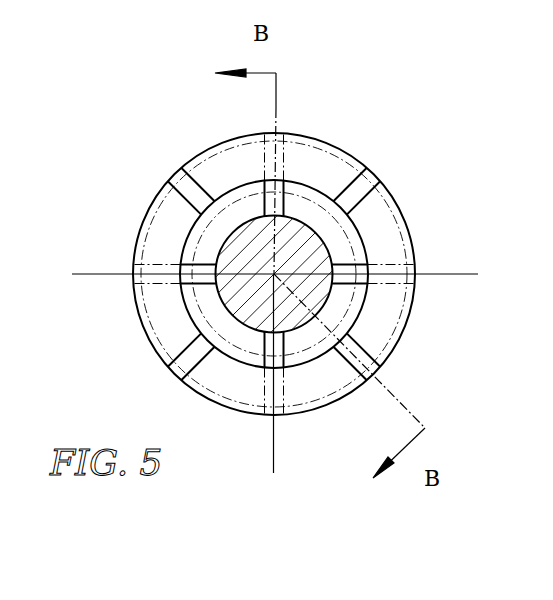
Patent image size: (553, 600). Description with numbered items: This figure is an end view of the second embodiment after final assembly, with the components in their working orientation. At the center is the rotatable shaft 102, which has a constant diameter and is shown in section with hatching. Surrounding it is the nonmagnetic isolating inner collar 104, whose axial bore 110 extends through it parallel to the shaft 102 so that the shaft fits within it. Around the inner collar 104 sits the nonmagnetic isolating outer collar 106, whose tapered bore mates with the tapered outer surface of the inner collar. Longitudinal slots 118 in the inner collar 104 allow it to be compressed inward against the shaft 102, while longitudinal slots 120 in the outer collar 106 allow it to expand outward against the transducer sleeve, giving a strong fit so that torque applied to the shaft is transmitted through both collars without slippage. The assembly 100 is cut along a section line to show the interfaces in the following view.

The rotatable shaft 102 is at (308, 222).
The nonmagnetic isolating inner collar 104 is at (333, 305).
The nonmagnetic isolating outer collar 106 is at (372, 336).
The axial bore 110 is at (247, 222).
The longitudinal slots 118 is at (355, 259).
The longitudinal slots 120 is at (382, 222).
The assembly 100 is at (545, 102).